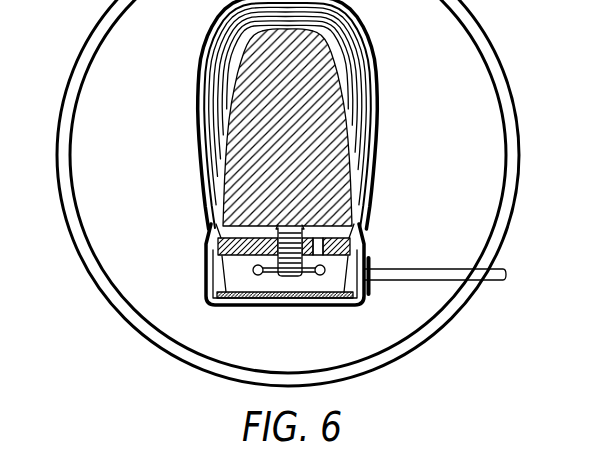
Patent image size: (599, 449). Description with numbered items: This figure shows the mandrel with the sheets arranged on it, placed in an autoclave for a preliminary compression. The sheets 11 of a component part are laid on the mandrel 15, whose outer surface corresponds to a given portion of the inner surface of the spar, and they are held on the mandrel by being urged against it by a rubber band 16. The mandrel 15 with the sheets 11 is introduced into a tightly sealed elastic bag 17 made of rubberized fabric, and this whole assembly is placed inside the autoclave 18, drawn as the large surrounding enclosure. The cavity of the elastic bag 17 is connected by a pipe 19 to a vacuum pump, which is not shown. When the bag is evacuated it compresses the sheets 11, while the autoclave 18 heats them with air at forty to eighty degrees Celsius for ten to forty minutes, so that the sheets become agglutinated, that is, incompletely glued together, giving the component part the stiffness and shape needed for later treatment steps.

The autoclave 18 is at (70, 88).
The elastic bag 17 is at (200, 102).
The rubber band 16 is at (205, 160).
The sheets 11 is at (372, 92).
The mandrel 15 is at (226, 203).
The pipe 19 is at (440, 272).